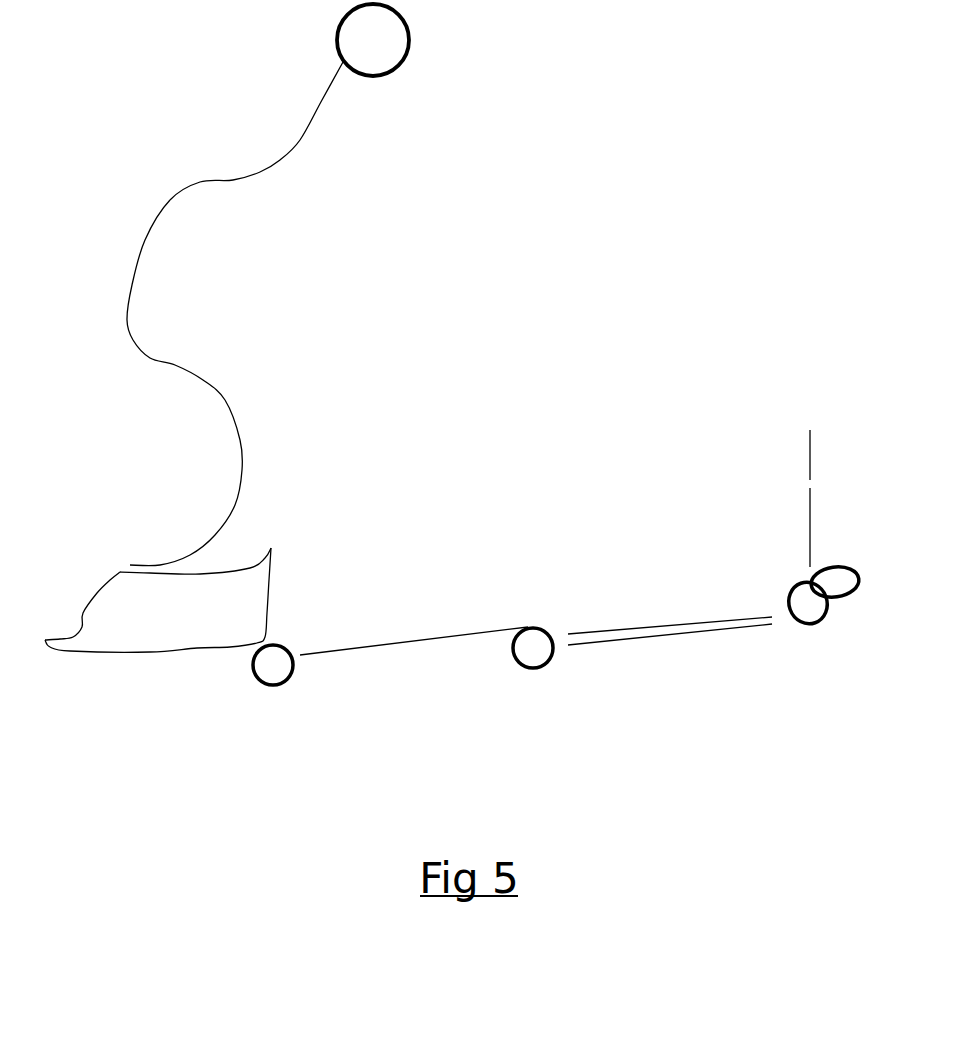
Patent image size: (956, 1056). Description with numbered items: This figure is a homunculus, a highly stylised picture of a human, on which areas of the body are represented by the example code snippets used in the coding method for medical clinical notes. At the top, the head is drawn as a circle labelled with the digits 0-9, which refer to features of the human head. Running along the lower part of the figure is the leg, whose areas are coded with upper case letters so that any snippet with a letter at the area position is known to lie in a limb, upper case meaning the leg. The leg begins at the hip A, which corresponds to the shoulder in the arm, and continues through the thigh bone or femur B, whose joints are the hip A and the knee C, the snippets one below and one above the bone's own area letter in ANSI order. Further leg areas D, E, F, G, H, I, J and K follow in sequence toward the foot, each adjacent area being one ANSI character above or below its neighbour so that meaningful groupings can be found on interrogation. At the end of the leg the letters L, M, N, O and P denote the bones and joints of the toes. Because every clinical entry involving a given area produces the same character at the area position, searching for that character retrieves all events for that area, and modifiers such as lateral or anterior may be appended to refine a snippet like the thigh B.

The head area code snippets 0-9 is at (348, 40).
The hip A is at (267, 684).
The thigh B is at (414, 660).
The knee C is at (533, 673).
The leg area code snippet D is at (670, 647).
The leg area code snippet E is at (783, 632).
The leg area code snippet F is at (834, 625).
The leg area code snippet G is at (830, 603).
The leg area code snippet H is at (854, 582).
The leg area code snippet I is at (833, 563).
The leg area code snippet J is at (856, 505).
The leg area code snippet K is at (815, 490).
The toe bone or joint L is at (797, 498).
The toe bone or joint M is at (792, 418).
The toe bone or joint N is at (810, 430).
The toe bone or joint O is at (812, 430).
The toe bone or joint P is at (843, 410).